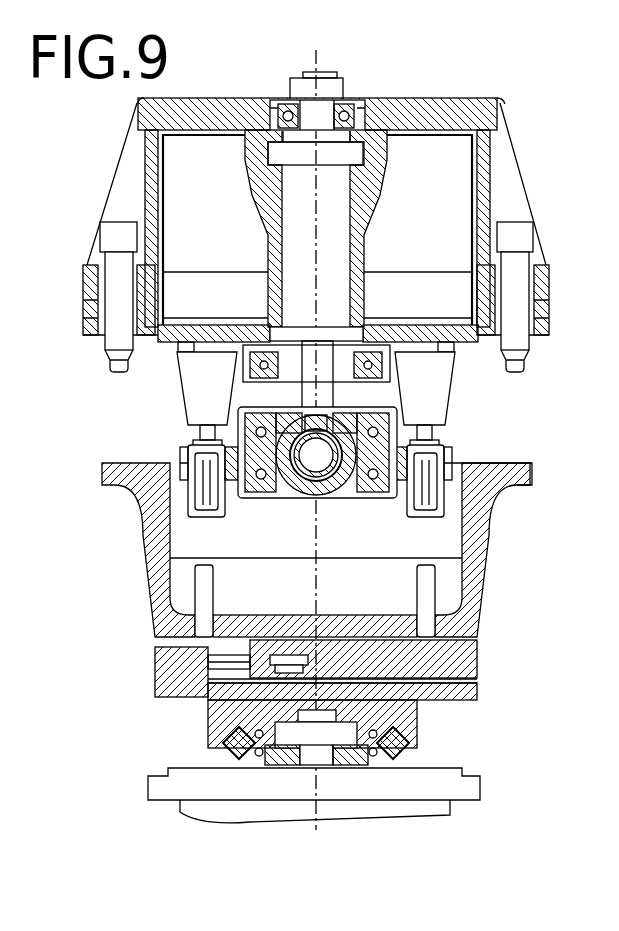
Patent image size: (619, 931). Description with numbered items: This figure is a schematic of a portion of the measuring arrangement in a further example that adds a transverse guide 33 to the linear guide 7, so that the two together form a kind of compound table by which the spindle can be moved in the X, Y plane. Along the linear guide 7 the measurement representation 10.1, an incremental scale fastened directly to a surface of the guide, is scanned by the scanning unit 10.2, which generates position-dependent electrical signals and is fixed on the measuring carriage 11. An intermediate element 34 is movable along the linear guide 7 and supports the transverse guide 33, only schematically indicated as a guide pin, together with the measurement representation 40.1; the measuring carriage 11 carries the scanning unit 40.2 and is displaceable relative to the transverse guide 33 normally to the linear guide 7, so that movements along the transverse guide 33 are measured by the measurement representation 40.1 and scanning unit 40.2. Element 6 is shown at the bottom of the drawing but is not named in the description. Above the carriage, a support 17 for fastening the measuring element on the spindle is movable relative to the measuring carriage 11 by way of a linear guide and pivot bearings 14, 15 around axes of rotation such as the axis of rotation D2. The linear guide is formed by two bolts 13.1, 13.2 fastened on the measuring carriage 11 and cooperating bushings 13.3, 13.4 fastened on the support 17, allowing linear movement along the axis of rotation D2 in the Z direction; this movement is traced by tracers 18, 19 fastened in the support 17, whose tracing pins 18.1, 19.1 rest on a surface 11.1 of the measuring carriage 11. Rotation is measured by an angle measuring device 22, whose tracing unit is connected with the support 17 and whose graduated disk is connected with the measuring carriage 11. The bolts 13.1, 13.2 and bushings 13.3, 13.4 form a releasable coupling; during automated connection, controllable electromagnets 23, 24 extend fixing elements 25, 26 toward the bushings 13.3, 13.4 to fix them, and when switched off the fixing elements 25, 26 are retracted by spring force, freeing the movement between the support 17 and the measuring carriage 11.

The axis of rotation D2 is at (322, 62).
The pivot bearing 14 is at (298, 110).
The support 17 is at (458, 111).
The angle measuring device 22 is at (440, 184).
The tracer 18 is at (113, 230).
The tracer 19 is at (520, 233).
The tracing pin 18.1 is at (110, 365).
The tracing pin 19.1 is at (524, 364).
The controllable electromagnet 23 is at (195, 400).
The controllable electromagnet 24 is at (437, 400).
The fixing element 25 is at (197, 450).
The fixing element 26 is at (437, 446).
The surface 11.1 is at (523, 463).
The bushing 13.3 is at (192, 496).
The bushing 13.4 is at (443, 495).
The pivot bearing 15 is at (353, 498).
The measuring carriage 11 is at (472, 556).
The bolt 13.1 is at (202, 590).
The bolt 13.2 is at (428, 597).
The scanning unit 40.2 is at (290, 660).
The transverse guide 33 is at (212, 660).
The intermediate element 34 is at (170, 682).
The measurement representation 40.1 is at (453, 666).
The scanning unit 10.2 is at (300, 711).
The measurement representation 10.1 is at (332, 716).
The base plate 6 is at (170, 786).
The linear guide 7 is at (360, 760).